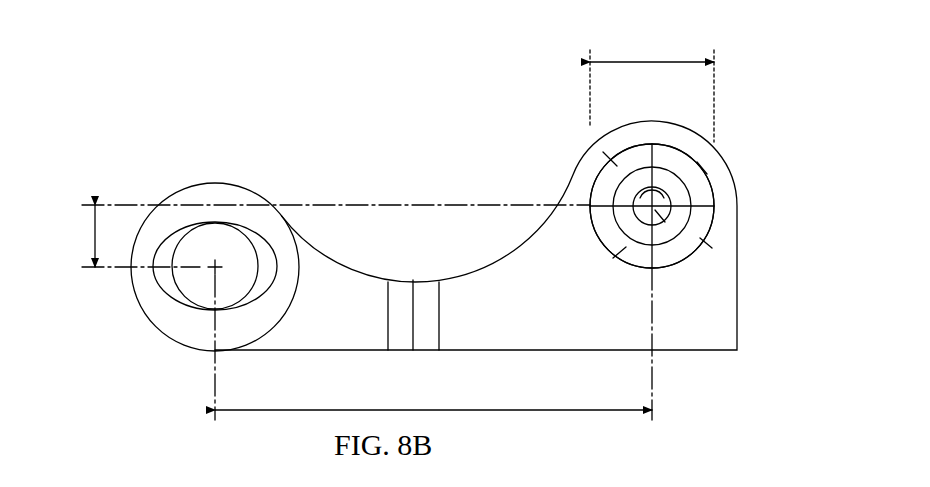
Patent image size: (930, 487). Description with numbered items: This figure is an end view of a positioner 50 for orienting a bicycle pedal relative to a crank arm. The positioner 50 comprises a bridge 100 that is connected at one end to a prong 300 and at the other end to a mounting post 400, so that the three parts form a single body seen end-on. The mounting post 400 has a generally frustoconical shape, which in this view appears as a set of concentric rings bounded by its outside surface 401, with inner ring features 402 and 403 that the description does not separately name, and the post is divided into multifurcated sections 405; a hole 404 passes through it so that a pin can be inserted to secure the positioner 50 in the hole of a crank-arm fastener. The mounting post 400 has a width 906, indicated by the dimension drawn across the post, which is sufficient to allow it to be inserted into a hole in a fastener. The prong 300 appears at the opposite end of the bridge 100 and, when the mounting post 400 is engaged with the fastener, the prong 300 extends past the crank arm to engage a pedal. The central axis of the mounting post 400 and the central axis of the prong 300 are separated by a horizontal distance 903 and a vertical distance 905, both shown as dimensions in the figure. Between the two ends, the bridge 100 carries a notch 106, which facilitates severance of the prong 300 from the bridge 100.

The positioner 50 is at (302, 85).
The bridge 100 is at (515, 333).
The notch 106 is at (410, 346).
The prong 300 is at (272, 280).
The mounting post 400 is at (668, 140).
The outside surface 401 is at (588, 147).
The intermediate ring 402 is at (638, 135).
The central bore 403 is at (600, 223).
The hole 404 is at (664, 268).
The multifurcated sections 405 is at (596, 186).
The distance 903 is at (490, 414).
The distance 905 is at (90, 234).
The width 906 is at (652, 60).